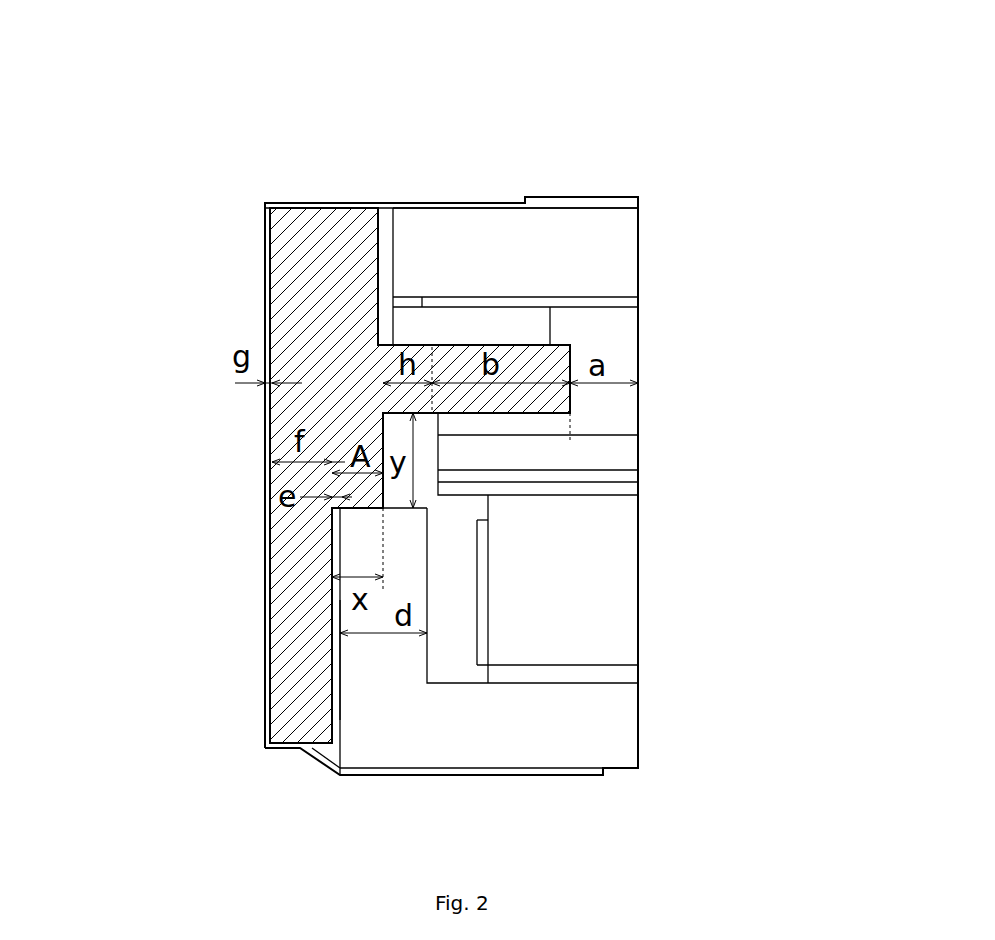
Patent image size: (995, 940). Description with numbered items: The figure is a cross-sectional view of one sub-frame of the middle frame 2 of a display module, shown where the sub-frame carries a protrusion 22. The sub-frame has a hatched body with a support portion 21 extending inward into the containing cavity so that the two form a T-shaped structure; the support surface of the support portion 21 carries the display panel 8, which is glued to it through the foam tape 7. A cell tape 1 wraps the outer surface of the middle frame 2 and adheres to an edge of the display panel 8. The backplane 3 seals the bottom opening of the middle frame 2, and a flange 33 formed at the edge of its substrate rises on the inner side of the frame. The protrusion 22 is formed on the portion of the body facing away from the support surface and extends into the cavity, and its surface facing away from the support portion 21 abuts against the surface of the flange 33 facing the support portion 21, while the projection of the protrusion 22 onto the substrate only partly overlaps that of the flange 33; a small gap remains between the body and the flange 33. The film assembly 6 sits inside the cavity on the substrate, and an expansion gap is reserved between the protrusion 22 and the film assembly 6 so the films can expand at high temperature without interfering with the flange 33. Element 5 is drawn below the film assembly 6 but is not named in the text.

The cell tape 1 is at (351, 397).
The middle frame 2 is at (497, 500).
The backplane 3 is at (334, 641).
The lower component 5 is at (643, 571).
The film assembly 6 is at (649, 404).
The foam tape 7 is at (626, 262).
The display panel 8 is at (626, 184).
The support portion 21 is at (472, 378).
The protrusion 22 is at (370, 440).
The flange 33 is at (360, 663).